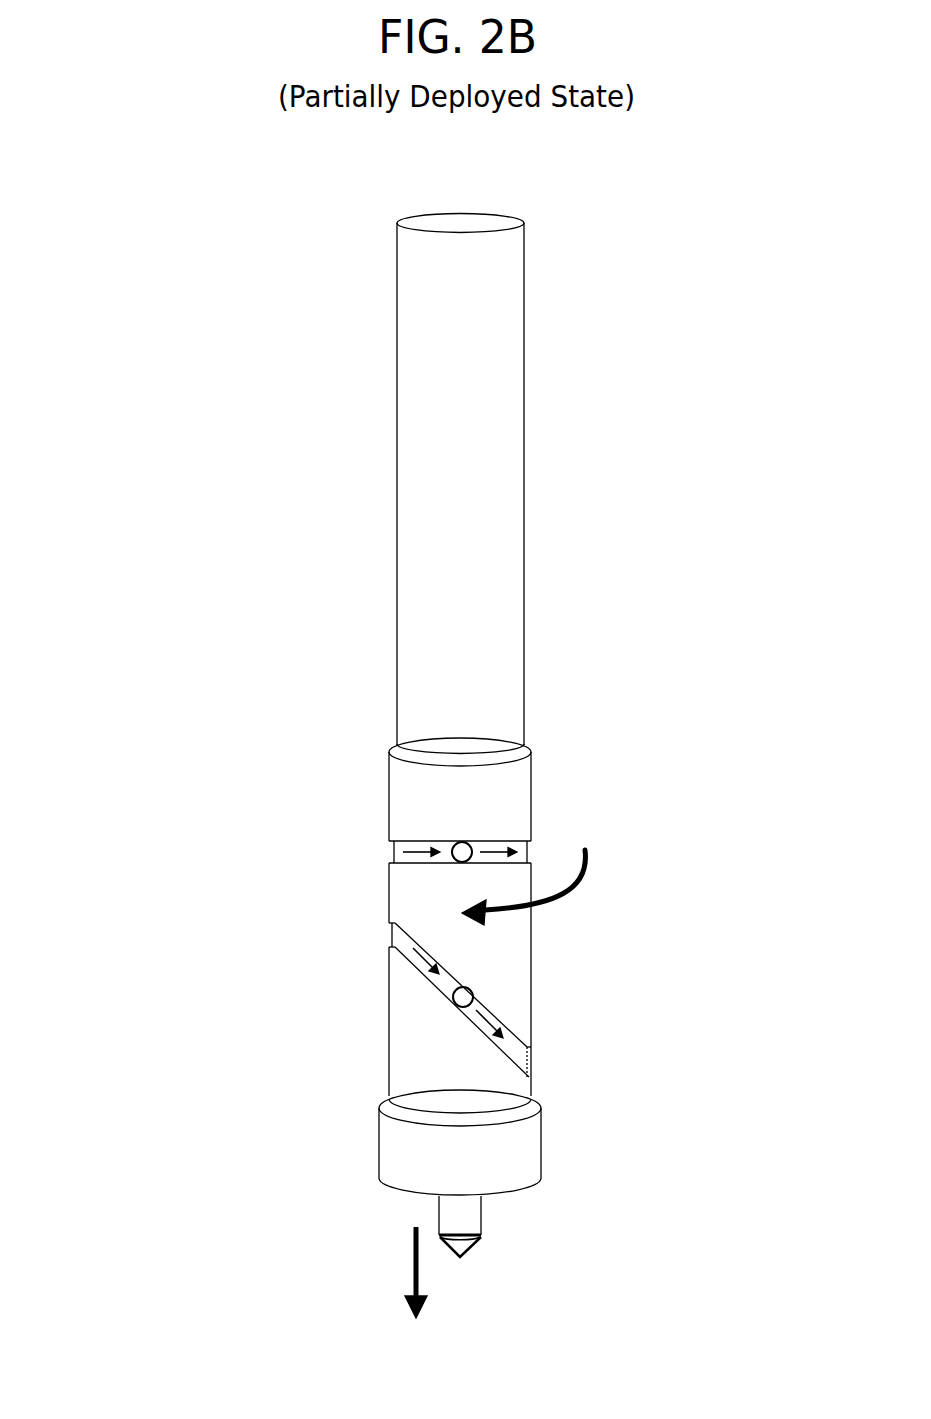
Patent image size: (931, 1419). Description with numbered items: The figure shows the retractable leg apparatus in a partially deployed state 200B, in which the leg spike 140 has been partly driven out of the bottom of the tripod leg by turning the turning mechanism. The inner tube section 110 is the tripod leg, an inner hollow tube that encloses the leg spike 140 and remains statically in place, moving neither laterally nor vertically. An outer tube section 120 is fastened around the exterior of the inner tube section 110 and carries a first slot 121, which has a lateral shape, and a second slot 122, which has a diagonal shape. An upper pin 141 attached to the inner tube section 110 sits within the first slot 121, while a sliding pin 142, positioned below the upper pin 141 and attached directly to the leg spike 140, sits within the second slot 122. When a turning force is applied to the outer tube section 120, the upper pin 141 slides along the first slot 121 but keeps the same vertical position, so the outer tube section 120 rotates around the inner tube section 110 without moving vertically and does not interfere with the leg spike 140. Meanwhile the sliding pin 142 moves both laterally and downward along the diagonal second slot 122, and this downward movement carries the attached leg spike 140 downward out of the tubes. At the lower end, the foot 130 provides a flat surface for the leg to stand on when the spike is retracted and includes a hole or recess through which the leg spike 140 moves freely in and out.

The deployable tool assembly (partially deployed state) 200B is at (113, 48).
The inner tube section 110 is at (480, 284).
The outer tube section 120 is at (480, 798).
The first slot 121 is at (452, 862).
The second slot 122 is at (449, 988).
The foot 130 is at (480, 1164).
The leg spike 140 is at (467, 1220).
The upper pin 141 is at (453, 845).
The sliding pin 142 is at (466, 987).